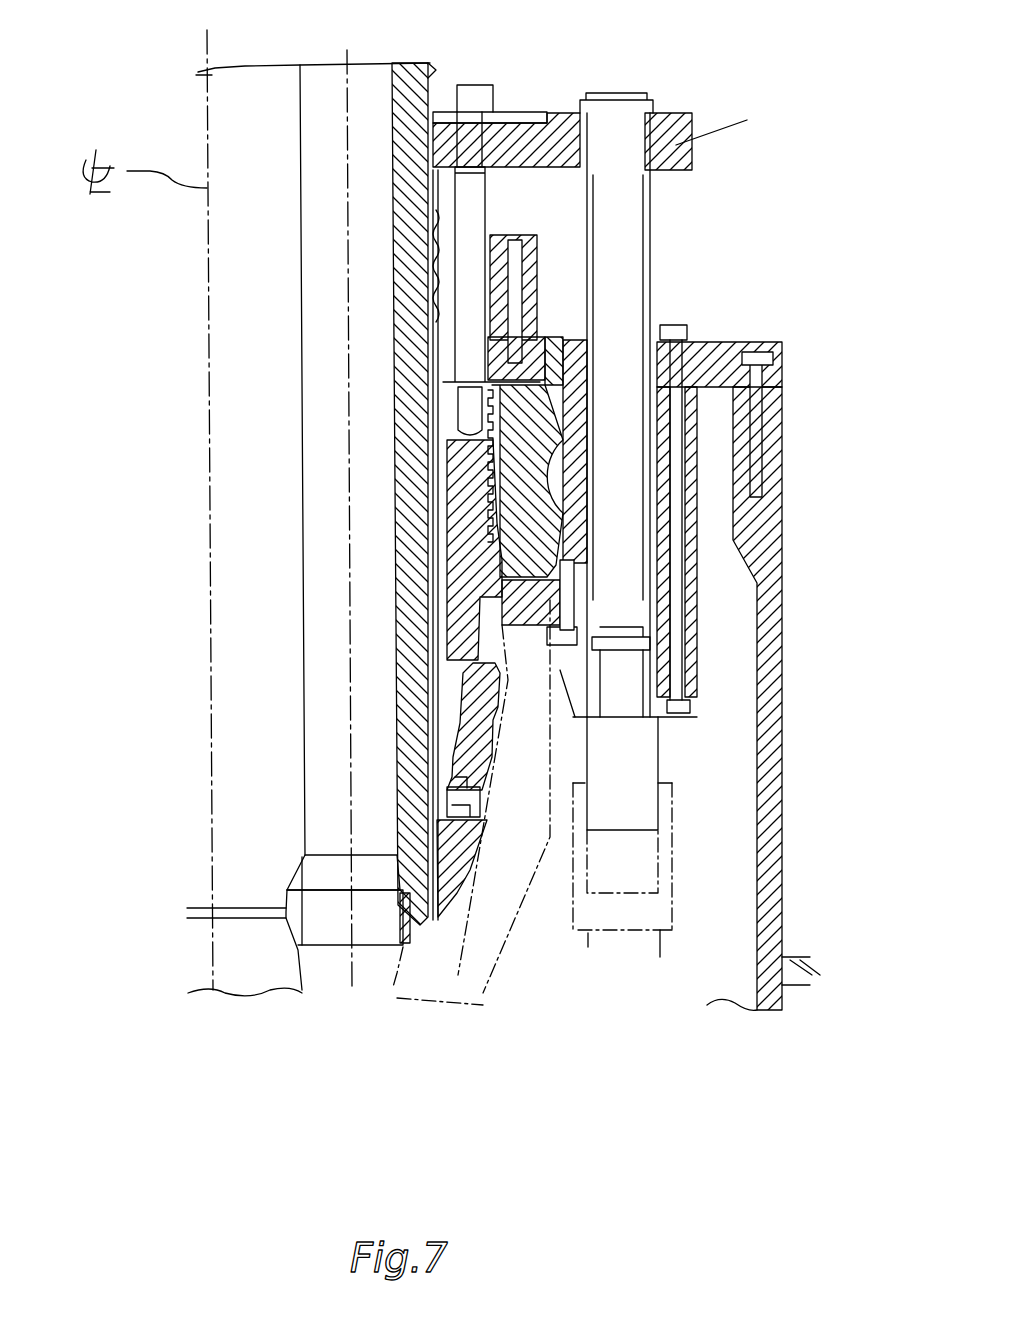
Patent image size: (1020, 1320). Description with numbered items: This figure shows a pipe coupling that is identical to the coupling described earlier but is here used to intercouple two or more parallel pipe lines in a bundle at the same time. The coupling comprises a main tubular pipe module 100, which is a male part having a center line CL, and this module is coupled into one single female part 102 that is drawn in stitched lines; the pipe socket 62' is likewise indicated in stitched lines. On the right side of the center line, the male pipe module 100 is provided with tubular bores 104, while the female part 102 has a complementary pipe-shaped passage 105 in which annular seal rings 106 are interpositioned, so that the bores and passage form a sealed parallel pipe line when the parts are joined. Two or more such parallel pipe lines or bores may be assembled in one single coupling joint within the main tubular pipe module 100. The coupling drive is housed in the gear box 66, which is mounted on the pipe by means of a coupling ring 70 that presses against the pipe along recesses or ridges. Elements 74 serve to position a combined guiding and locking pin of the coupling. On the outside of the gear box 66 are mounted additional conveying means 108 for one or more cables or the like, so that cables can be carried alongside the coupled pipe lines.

The main tubular pipe module 100 is at (249, 112).
The tubular bores 104 is at (390, 170).
The elements for positioning a combined guiding and locking pin 74 is at (470, 233).
The additional conveying means 108 is at (642, 253).
The coupling ring 70 is at (533, 313).
The gear box 66 is at (713, 347).
The pipe-shaped passage 105 is at (300, 955).
The pipe socket 62' is at (348, 988).
The female part 102 is at (430, 992).
The annular seal rings 106 is at (413, 933).